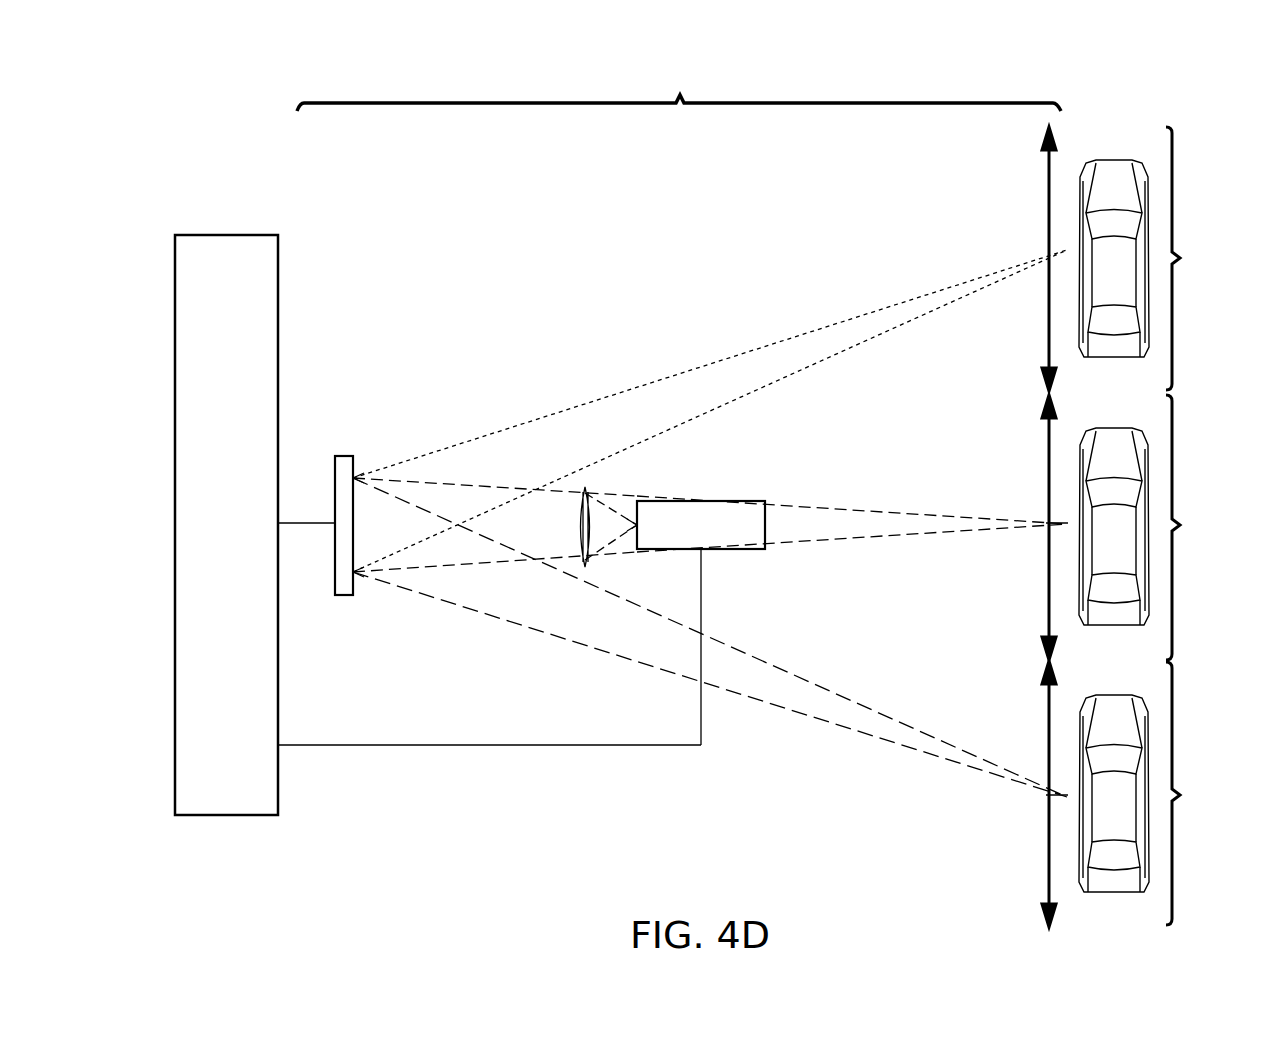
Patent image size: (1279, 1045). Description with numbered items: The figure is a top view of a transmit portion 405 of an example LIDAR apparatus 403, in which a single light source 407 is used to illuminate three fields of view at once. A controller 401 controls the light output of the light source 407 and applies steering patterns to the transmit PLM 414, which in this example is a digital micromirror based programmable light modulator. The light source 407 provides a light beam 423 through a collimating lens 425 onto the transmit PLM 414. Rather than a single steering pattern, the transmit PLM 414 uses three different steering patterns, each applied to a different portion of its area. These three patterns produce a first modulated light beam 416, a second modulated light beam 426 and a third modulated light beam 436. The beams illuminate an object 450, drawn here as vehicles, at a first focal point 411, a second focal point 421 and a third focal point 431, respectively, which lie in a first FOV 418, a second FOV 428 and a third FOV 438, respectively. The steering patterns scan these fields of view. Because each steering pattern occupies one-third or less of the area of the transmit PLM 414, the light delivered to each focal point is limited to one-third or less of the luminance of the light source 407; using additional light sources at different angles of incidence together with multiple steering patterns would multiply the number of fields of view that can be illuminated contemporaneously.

The controller 401 is at (438, 525).
The LIDAR apparatus 403 is at (237, 90).
The transmit portion 405 is at (679, 88).
The light source 407 is at (740, 550).
The first focal point 411 is at (1044, 800).
The transmit PLM 414 is at (340, 455).
The first modulated light beam 416 is at (866, 710).
The first FOV 418 is at (1198, 793).
The second focal point 421 is at (1044, 530).
The light beam 423 is at (508, 562).
The collimating lens 425 is at (592, 487).
The second modulated light beam 426 is at (890, 512).
The second FOV 428 is at (1198, 527).
The third focal point 431 is at (1046, 255).
The third modulated light beam 436 is at (874, 333).
The third FOV 438 is at (1198, 258).
The object 450 is at (1114, 158).